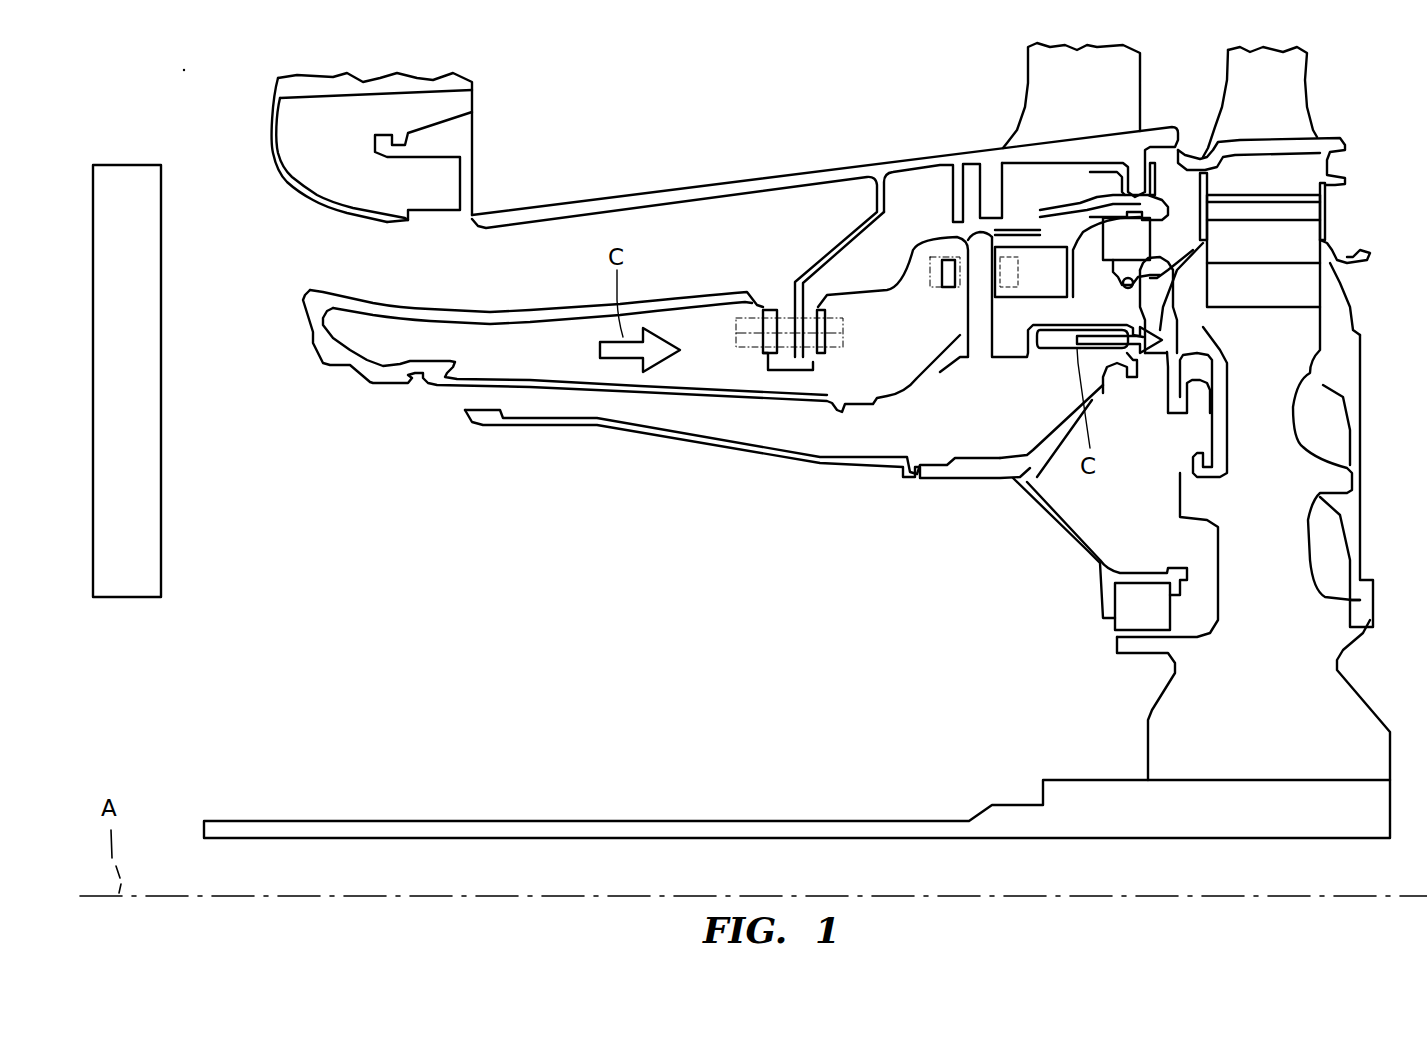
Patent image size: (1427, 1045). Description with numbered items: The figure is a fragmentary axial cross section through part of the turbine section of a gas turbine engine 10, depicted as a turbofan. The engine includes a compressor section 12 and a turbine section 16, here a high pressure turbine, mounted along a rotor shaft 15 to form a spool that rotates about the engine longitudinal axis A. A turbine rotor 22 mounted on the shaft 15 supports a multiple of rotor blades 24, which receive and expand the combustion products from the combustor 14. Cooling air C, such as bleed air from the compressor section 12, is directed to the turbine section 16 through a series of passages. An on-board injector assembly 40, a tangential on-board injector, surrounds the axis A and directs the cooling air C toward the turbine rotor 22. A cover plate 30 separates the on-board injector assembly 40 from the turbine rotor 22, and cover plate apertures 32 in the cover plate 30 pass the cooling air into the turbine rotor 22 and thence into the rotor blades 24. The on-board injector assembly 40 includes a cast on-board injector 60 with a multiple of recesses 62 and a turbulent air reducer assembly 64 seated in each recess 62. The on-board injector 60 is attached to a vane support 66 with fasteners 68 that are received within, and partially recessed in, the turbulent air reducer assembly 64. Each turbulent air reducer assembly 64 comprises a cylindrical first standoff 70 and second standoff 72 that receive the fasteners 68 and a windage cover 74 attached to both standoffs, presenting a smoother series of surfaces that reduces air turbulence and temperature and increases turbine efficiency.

The gas turbine engine 10 is at (222, 108).
The compressor section 12 is at (141, 393).
The combustor 14 is at (592, 139).
The rotor shaft 15 is at (1294, 817).
The turbine section 16 is at (1377, 380).
The turbine rotor 22 is at (1276, 465).
The rotor blades 24 is at (1300, 107).
The cover plate 30 is at (1175, 372).
The cover plate apertures 32 is at (1202, 320).
The on-board injector assembly 40 is at (933, 338).
The on-board injector 60 is at (957, 324).
The recesses 62 is at (1013, 317).
The turbulent air reducer assembly 64 is at (1050, 267).
The vane support 66 is at (867, 290).
The fasteners 68 is at (988, 268).
The first standoff 70 is at (1038, 240).
The second standoff 72 is at (1042, 150).
The windage cover 74 is at (1079, 303).